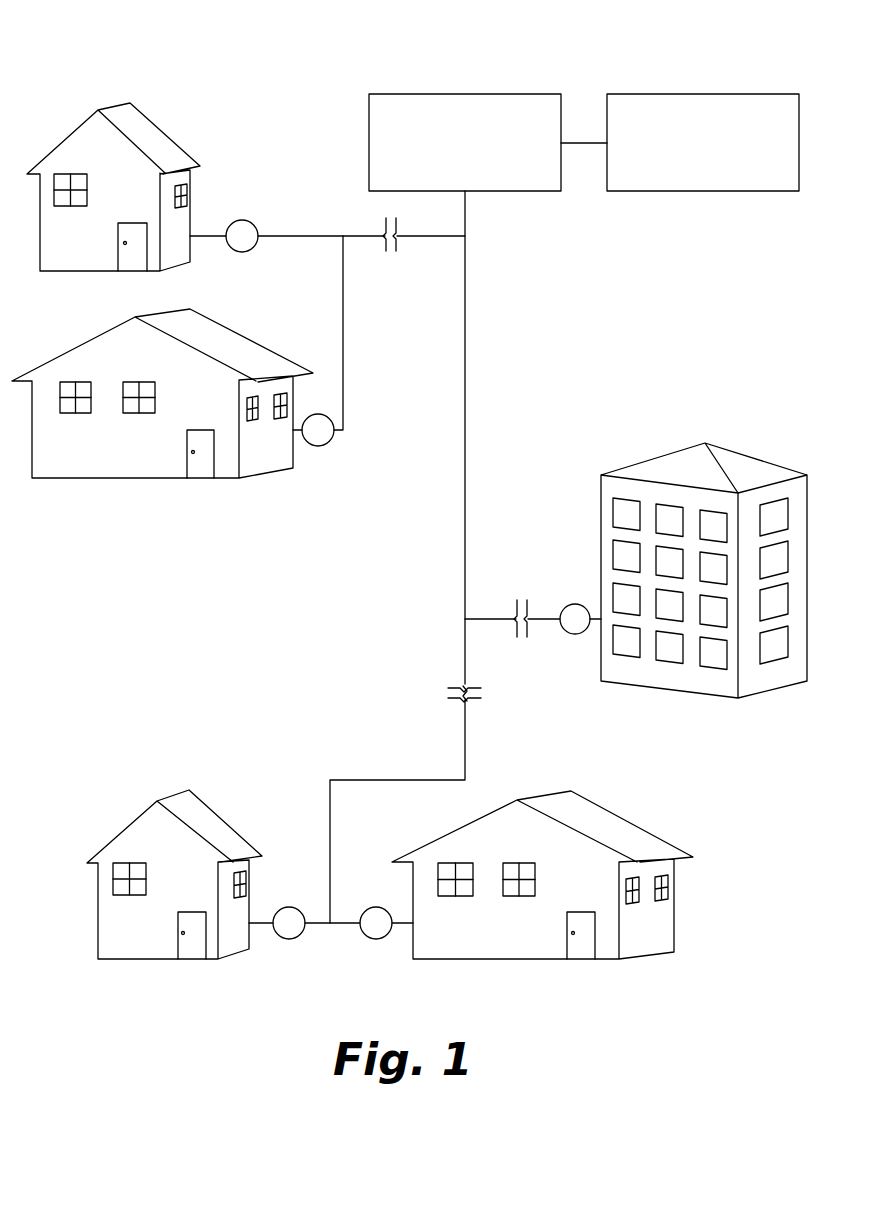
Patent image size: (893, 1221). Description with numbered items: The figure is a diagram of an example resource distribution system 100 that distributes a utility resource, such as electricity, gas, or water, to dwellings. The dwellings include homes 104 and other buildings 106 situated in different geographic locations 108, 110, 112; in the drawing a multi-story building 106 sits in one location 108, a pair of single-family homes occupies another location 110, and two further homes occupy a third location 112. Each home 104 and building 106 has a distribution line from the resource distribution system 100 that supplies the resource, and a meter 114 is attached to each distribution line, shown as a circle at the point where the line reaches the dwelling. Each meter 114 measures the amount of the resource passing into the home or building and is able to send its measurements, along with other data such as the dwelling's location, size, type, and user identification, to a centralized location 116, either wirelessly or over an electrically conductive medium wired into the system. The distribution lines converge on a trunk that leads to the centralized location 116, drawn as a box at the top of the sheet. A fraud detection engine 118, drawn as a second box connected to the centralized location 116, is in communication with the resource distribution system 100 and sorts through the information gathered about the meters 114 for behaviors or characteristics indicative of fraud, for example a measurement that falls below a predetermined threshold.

The resource distribution system 100 is at (233, 61).
The home 104 is at (250, 945).
The building 106 is at (644, 465).
The geographic location 108 is at (636, 526).
The geographic location 110 is at (305, 512).
The geographic location 112 is at (186, 745).
The meter 114 is at (313, 436).
The centralized location 116 is at (506, 93).
The fraud detection engine 118 is at (777, 93).